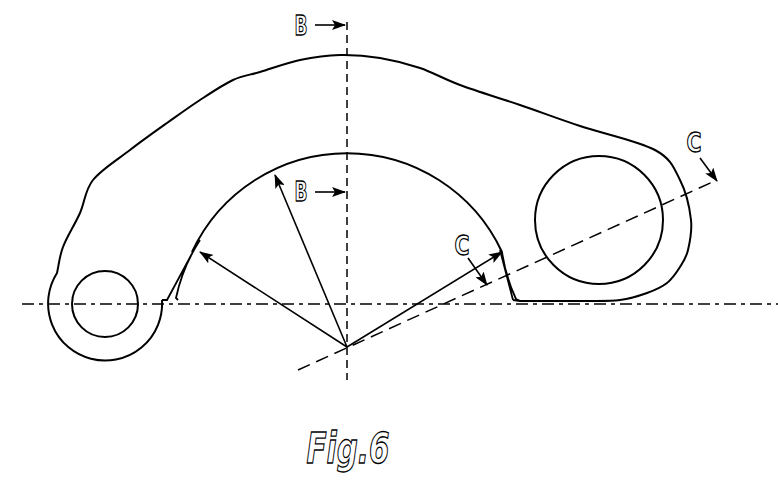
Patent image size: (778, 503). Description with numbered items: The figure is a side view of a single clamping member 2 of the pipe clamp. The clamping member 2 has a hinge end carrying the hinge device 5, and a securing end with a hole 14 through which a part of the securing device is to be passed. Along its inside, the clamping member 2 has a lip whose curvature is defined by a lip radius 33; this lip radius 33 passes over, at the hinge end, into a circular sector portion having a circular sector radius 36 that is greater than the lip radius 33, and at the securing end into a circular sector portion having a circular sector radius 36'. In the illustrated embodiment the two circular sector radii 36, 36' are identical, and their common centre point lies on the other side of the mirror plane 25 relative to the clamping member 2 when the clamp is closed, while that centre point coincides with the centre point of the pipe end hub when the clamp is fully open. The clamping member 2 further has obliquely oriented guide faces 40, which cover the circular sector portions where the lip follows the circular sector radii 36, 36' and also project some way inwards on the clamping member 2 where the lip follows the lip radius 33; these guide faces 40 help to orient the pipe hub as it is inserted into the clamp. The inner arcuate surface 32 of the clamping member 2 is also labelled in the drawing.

The clamping member 2 is at (410, 77).
The inner arcuate surface 32 is at (416, 166).
The guide faces 40 is at (171, 300).
The hole 14 is at (592, 174).
The hinge device 5 is at (86, 321).
The mirror plane 25 is at (693, 305).
The lip radius 33 is at (299, 224).
The circular sector radius 36 is at (273, 294).
The circular sector radius 36' is at (424, 299).